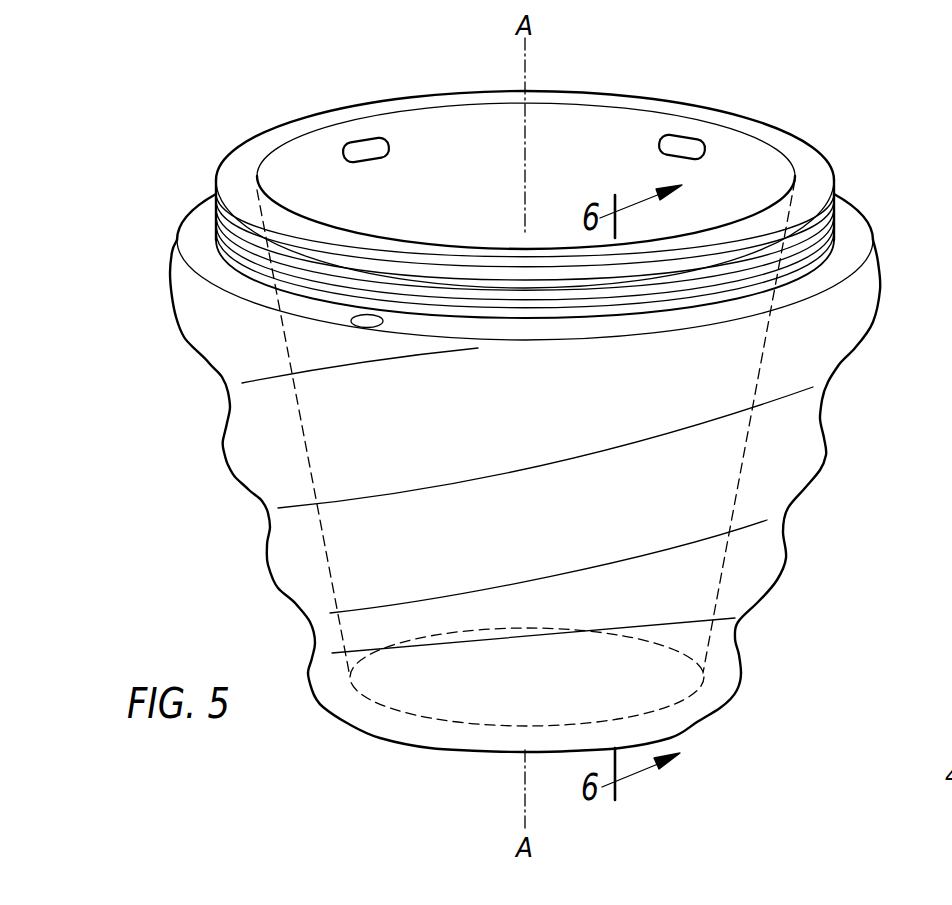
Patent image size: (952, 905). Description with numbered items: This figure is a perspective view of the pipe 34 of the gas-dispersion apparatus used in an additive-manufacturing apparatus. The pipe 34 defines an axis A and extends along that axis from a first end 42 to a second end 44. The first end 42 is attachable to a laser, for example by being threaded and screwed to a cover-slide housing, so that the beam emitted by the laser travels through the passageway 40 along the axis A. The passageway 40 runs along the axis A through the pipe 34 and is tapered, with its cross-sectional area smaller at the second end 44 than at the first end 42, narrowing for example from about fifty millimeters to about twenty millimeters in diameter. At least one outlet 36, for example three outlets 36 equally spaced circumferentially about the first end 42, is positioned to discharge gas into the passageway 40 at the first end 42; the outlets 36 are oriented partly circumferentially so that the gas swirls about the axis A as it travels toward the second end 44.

The pipe 34 is at (885, 242).
The outlet 36 is at (370, 137).
The passageway 40 is at (750, 424).
The first end 42 is at (266, 130).
The second end 44 is at (418, 745).